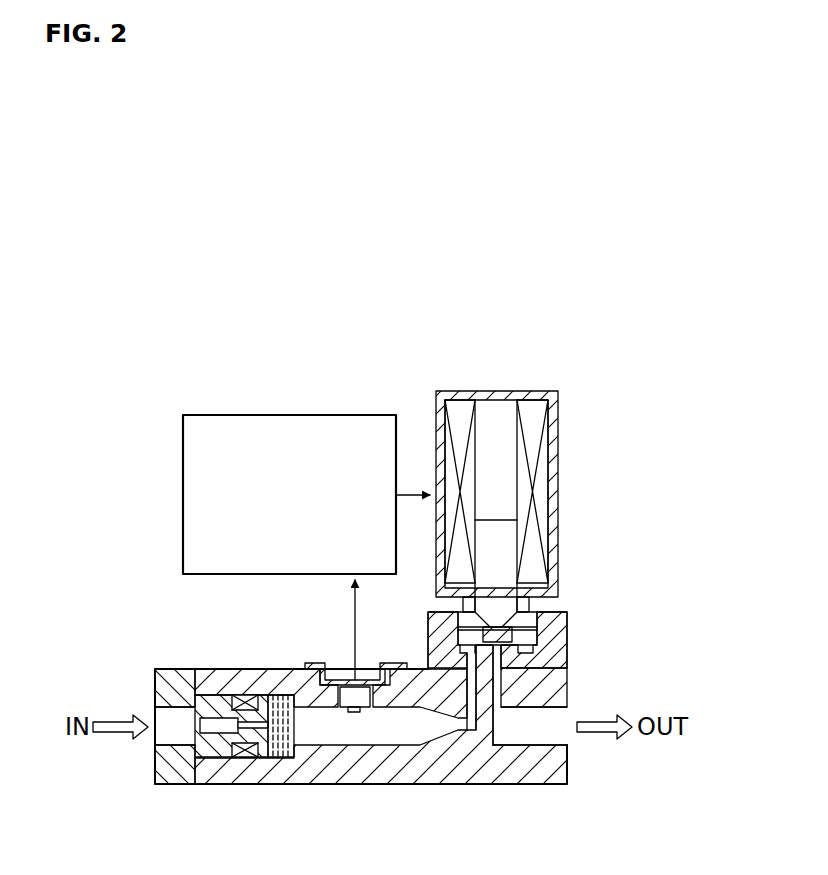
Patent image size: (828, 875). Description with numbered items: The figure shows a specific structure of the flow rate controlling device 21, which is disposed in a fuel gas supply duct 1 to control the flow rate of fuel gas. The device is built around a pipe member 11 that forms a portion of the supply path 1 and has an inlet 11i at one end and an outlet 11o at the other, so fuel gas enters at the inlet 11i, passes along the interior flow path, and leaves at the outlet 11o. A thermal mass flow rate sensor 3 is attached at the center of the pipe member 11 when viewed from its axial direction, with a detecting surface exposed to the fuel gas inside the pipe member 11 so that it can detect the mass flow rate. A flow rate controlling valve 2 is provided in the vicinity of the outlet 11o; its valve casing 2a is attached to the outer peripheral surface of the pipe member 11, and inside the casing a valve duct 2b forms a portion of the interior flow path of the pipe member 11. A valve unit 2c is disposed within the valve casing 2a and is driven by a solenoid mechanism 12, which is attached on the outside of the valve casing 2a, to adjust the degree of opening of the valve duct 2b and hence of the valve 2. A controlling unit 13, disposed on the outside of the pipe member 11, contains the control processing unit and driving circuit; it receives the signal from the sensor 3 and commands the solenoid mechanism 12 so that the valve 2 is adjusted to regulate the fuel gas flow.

The flow rate controlling device 21 is at (266, 505).
The controlling unit 13 is at (183, 437).
The solenoid mechanism 12 is at (541, 469).
The flow rate controlling valve 2 is at (516, 568).
The valve casing 2a is at (568, 654).
The valve duct 2b is at (470, 634).
The valve unit 2c is at (568, 632).
The fuel gas supply duct 1 is at (347, 718).
The thermal mass flow rate thermal-type sensor 3 is at (354, 713).
The pipe member 11 is at (364, 745).
The inlet 11i is at (166, 740).
The outlet 11o is at (555, 736).